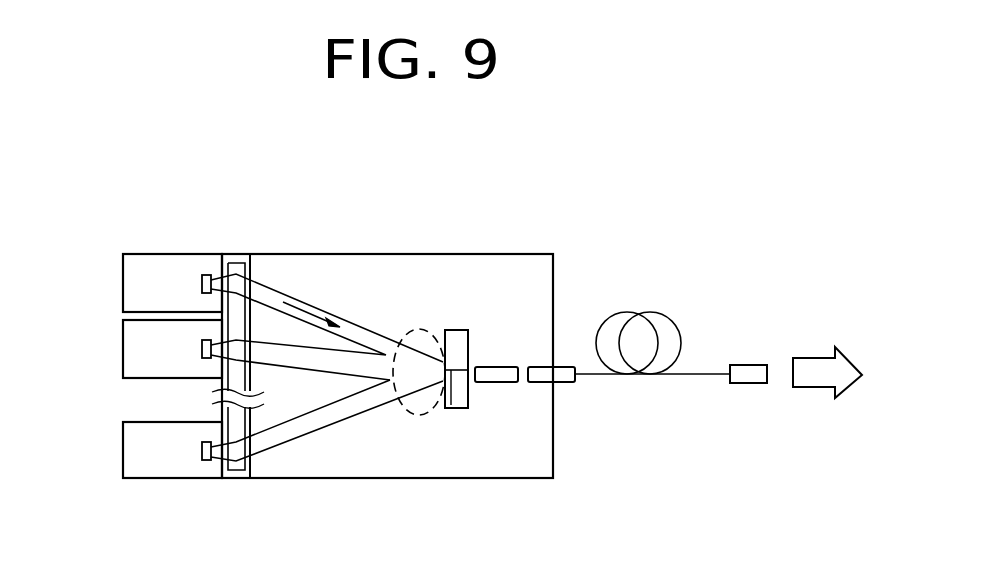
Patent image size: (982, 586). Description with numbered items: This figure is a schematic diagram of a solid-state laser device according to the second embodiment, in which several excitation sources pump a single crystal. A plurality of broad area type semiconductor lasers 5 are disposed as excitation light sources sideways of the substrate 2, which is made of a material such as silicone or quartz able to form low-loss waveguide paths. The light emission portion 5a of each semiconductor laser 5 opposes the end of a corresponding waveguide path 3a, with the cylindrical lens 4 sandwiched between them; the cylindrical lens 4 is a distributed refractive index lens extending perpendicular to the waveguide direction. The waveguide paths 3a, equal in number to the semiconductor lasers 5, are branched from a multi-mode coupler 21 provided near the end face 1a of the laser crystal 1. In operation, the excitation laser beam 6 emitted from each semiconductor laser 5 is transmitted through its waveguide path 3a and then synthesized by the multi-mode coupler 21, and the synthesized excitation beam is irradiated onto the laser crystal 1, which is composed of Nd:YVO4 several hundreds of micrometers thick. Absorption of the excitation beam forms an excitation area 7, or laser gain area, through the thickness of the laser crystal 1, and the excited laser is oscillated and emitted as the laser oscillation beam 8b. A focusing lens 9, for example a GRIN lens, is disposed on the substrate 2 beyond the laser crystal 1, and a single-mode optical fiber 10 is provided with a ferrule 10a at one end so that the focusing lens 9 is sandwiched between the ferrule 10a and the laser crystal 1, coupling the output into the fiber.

The laser crystal 1 is at (455, 332).
The end face 1a is at (445, 332).
The substrate 2 is at (514, 268).
The waveguide path 3a is at (330, 418).
The cylindrical lens 4 is at (236, 470).
The semiconductor laser 5 is at (135, 281).
The light emission portion 5a is at (202, 457).
The excitation laser beam 6 is at (311, 302).
The excitation area 7 is at (460, 408).
The laser oscillation beam 8b is at (818, 358).
The focusing lens 9 is at (507, 370).
The single-mode optical fiber 10 is at (703, 375).
The ferrule 10a is at (565, 383).
The multi-mode coupler 21 is at (412, 415).